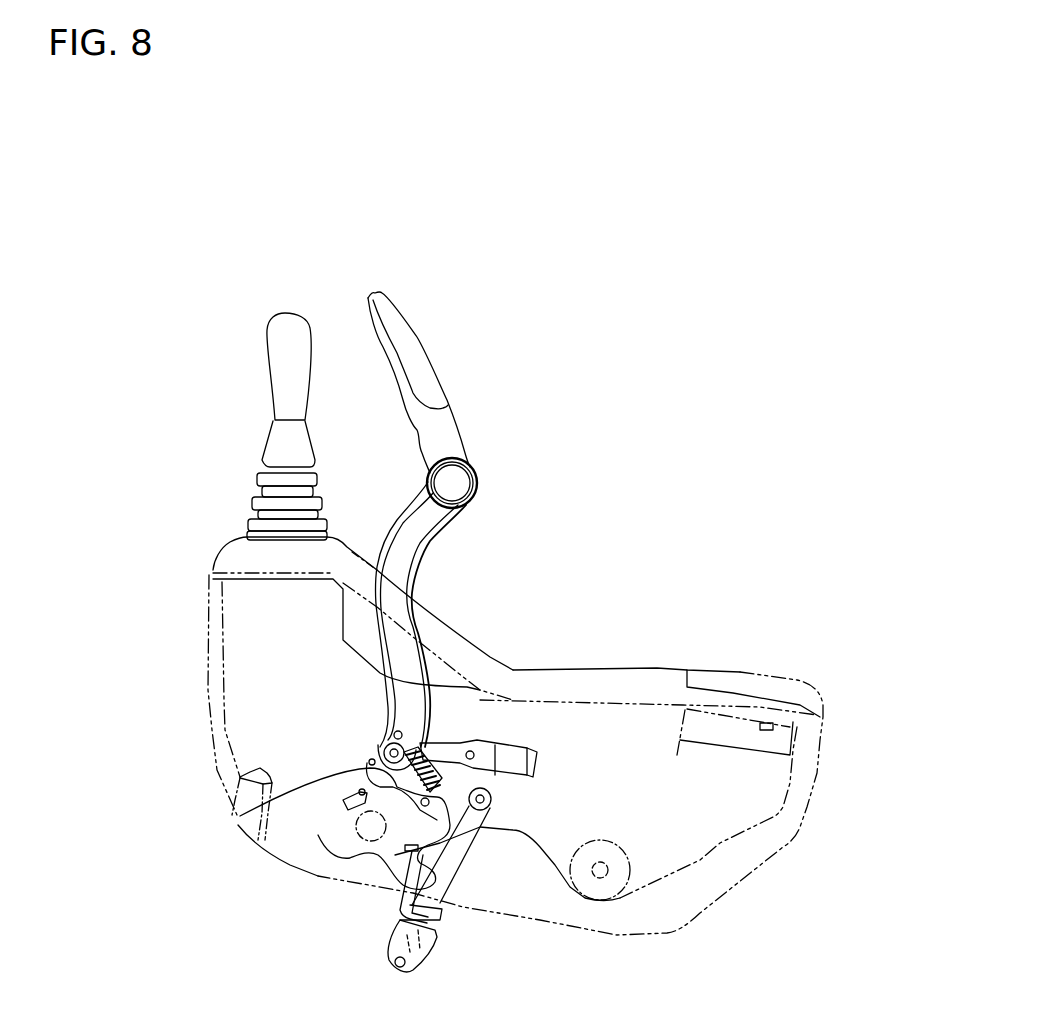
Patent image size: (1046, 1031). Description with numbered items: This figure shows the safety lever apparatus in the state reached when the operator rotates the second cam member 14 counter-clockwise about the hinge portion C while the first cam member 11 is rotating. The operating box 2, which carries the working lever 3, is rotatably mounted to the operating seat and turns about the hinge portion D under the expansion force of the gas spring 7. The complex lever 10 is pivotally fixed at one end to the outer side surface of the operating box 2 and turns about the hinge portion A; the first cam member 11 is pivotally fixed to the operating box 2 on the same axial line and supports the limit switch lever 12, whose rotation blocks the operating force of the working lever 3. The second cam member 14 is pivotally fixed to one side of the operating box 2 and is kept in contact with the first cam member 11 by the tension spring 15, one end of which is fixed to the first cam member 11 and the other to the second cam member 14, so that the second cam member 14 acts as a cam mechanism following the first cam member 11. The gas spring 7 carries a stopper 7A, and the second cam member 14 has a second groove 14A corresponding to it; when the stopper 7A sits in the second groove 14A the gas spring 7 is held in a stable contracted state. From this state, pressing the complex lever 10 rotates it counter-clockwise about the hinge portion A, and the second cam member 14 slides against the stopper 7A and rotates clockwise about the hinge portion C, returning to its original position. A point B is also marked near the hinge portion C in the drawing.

The operating box 2 is at (808, 784).
The working lever 3 is at (283, 351).
The gas spring 7 is at (445, 862).
The stopper 7A is at (410, 858).
The complex lever 10 is at (410, 347).
The first cam member 11 is at (240, 816).
The limit switch lever 12 is at (535, 748).
The second cam member 14 is at (392, 798).
The second groove 14A is at (413, 850).
The tension spring 15 is at (432, 752).
The hinge portion A is at (380, 748).
The point B is at (458, 745).
The hinge portion C is at (440, 742).
The hinge portion D is at (600, 873).